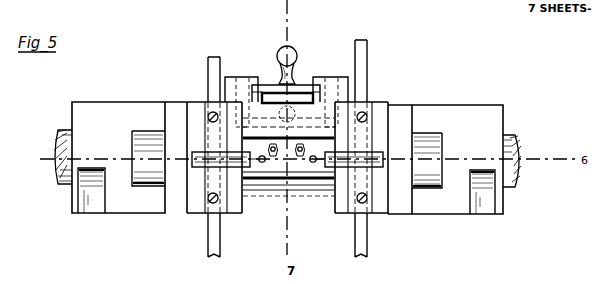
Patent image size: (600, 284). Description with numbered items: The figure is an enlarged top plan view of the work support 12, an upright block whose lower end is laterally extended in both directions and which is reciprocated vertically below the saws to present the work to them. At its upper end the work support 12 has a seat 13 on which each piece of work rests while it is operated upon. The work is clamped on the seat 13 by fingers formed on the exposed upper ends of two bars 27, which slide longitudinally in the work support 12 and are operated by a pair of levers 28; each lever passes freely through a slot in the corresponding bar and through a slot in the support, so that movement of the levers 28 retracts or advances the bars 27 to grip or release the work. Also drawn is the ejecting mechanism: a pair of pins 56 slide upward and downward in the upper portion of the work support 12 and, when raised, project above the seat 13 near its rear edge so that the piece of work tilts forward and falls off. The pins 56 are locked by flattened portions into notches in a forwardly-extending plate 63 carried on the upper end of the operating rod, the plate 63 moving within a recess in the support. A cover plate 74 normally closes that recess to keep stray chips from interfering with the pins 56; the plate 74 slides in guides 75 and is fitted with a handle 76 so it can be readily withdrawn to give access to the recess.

The work support 12 is at (414, 118).
The seat 13 is at (314, 163).
The bars 27 is at (213, 164).
The levers 28 is at (208, 251).
The pins 56 is at (300, 159).
The plate 63 is at (332, 97).
The plate 74 is at (268, 86).
The guides 75 is at (237, 92).
The handle 76 is at (300, 70).